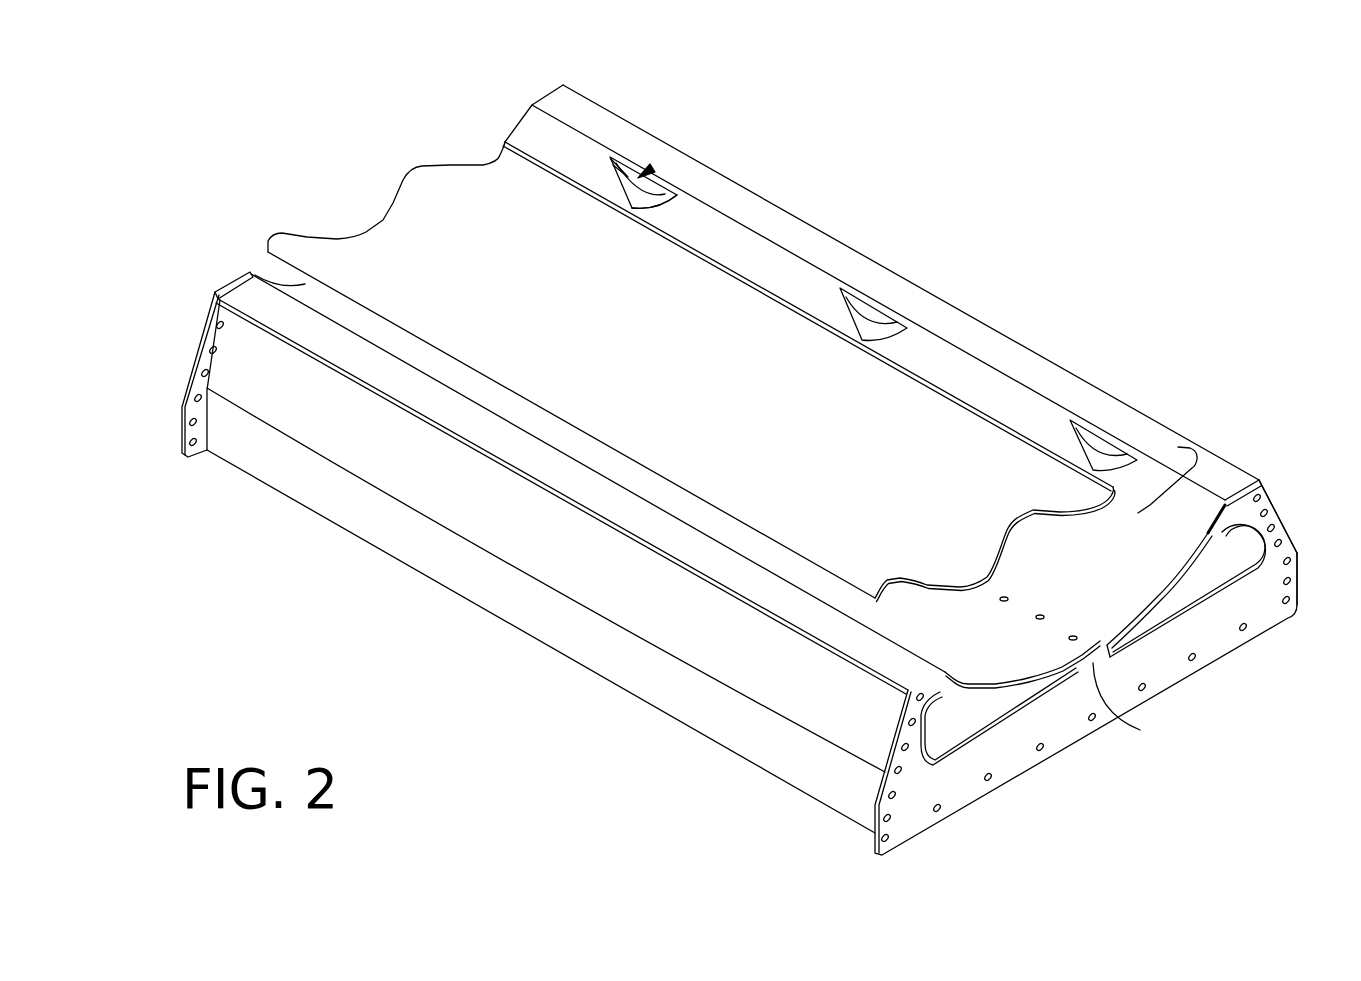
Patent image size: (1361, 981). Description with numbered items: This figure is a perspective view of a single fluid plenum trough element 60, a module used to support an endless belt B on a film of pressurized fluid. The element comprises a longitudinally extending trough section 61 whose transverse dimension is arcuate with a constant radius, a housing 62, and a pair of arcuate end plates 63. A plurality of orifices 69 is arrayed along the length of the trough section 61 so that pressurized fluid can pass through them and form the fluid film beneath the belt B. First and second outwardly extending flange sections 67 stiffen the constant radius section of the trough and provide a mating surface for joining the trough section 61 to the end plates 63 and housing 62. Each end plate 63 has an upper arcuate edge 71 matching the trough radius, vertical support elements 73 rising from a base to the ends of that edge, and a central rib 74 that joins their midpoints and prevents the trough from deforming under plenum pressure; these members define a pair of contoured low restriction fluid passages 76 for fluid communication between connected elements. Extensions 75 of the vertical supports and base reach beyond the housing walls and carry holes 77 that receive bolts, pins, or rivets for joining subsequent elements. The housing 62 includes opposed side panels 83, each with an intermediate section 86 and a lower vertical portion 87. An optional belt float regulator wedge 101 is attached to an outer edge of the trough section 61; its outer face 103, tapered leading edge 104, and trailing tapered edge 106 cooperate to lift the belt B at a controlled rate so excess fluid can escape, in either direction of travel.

The fluid plenum trough element 60 is at (216, 261).
The endless belt B is at (397, 218).
The trough section 61 is at (1183, 439).
The housing 62 is at (292, 505).
The arcuate end plate 63 is at (195, 352).
The outwardly extending flange section 67 is at (722, 570).
The orifice 69 is at (1077, 632).
The upper arcuate edge 71 is at (1177, 591).
The vertical support element 73 is at (1292, 542).
The central rib 74 is at (1100, 707).
The extension 75 is at (1282, 587).
The contoured low restriction fluid passage 76 is at (1237, 547).
The hole 77 is at (989, 780).
The side panel 83 is at (537, 580).
The intermediate section 86 is at (460, 510).
The lower vertical portion 87 is at (425, 563).
The belt float regulator wedge 101 is at (653, 168).
The outer face 103 is at (637, 177).
The tapered leading edge 104 is at (622, 172).
The trailing tapered edge 106 is at (680, 202).